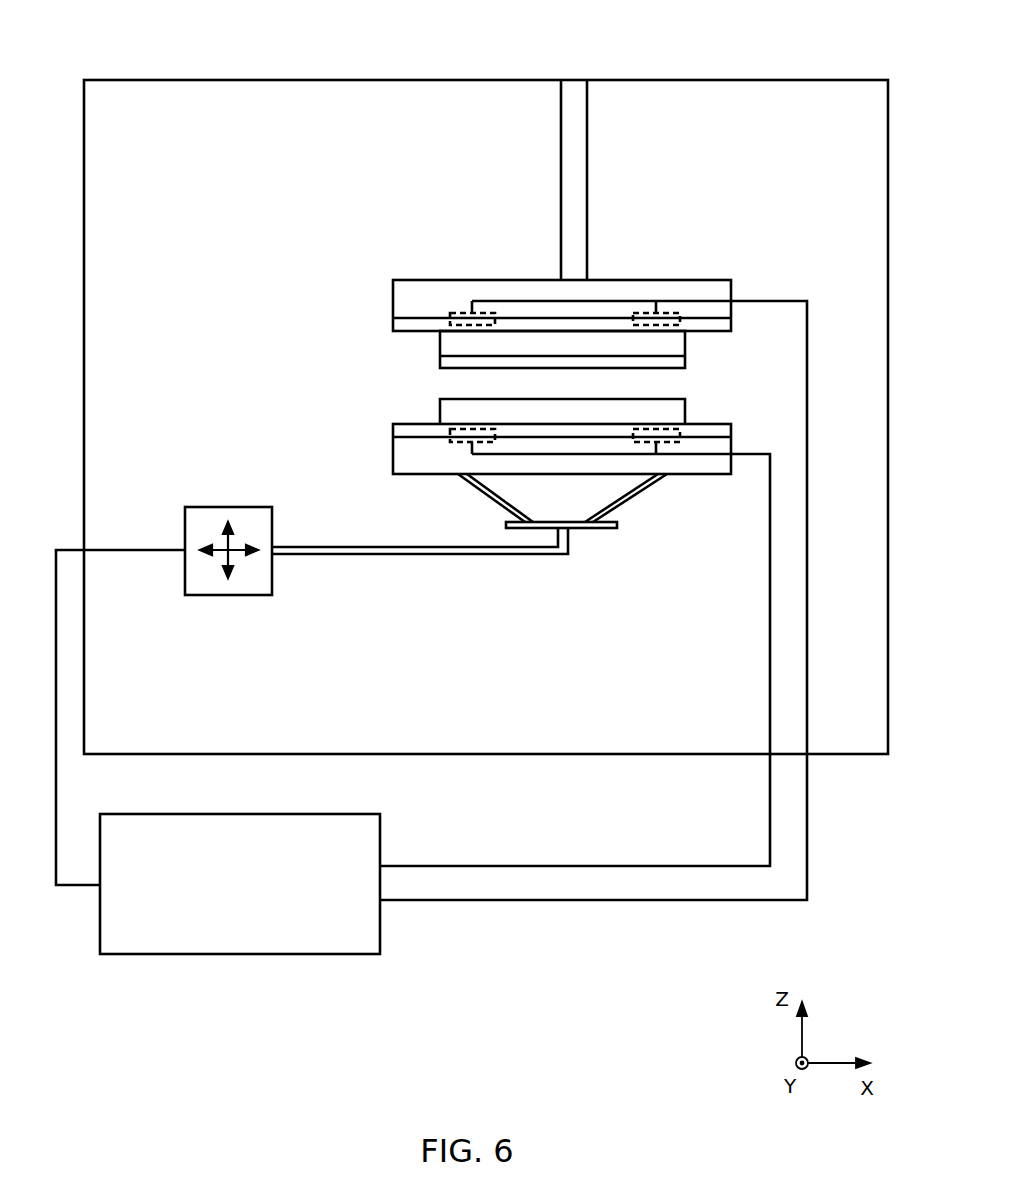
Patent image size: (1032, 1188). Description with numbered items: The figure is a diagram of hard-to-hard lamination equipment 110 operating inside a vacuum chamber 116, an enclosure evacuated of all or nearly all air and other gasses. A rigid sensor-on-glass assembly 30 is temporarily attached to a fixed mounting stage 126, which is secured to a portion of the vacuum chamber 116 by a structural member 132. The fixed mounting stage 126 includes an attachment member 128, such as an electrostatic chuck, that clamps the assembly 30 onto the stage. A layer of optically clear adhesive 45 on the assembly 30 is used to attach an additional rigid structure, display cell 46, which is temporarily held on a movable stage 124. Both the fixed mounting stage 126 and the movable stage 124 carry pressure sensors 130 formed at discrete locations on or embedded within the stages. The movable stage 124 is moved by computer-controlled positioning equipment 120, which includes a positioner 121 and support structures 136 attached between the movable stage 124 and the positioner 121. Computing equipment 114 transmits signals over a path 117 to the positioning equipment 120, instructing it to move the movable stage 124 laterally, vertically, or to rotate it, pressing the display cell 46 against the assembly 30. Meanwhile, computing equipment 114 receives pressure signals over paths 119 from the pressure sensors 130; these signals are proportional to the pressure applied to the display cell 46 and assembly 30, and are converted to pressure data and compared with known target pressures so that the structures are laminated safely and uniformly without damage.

The hard-to-hard lamination equipment 110 is at (250, 236).
The computing equipment 114 is at (353, 957).
The vacuum chamber 116 is at (656, 82).
The path 117 is at (132, 548).
The paths 119 is at (520, 867).
The computer-controlled positioning equipment 120 is at (676, 476).
The positioner 121 is at (268, 579).
The movable stage 124 is at (397, 456).
The fixed mounting stage 126 is at (710, 292).
The attachment member 128 is at (397, 324).
The pressure sensors 130 is at (472, 312).
The structural member 132 is at (590, 184).
The support structures 136 is at (500, 507).
The sensor-on-glass assembly 30 is at (445, 346).
The optically clear adhesive 45 is at (690, 360).
The display cell 46 is at (690, 410).